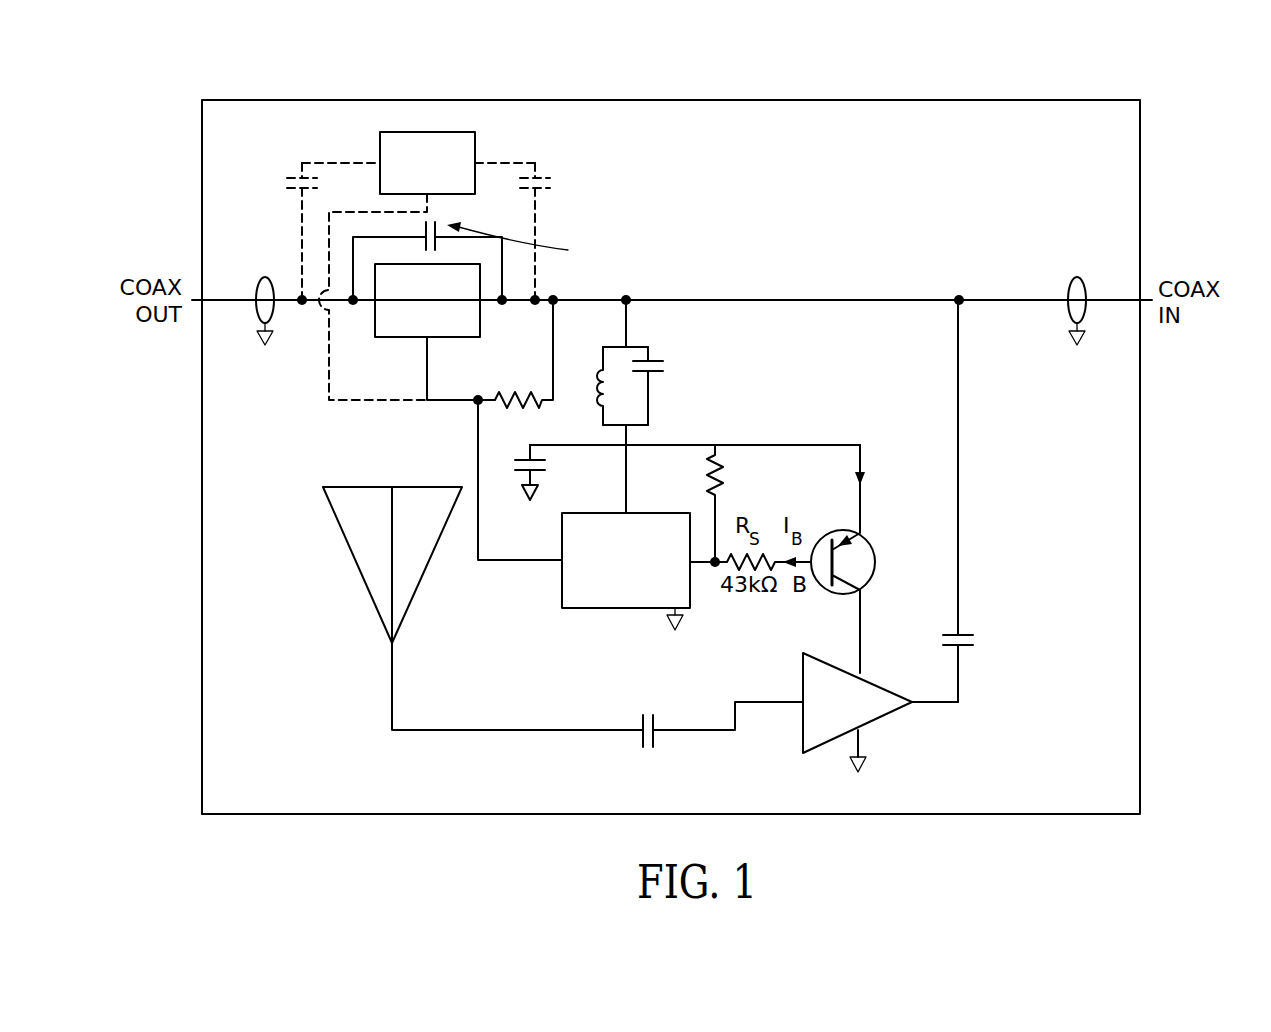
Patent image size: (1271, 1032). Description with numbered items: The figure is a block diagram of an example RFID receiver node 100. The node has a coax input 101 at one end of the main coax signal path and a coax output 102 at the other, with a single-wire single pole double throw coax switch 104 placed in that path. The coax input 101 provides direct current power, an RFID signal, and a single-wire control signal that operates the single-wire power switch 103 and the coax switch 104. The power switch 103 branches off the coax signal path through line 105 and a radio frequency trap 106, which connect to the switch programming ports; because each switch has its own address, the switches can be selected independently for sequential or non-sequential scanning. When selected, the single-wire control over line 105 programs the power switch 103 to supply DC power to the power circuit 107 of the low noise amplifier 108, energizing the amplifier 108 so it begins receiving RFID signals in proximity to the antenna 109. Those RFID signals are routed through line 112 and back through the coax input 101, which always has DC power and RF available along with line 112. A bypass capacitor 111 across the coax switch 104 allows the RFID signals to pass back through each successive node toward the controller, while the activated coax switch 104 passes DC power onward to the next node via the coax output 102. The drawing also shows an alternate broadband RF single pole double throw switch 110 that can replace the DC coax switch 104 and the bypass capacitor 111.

The RFID receiver node 100 is at (1172, 100).
The coax input 101 is at (1051, 293).
The coax output 102 is at (235, 293).
The 1-wire power switch 103 is at (626, 609).
The 1-wire single pole double throw coax switch 104 is at (385, 338).
The line (1-wire control) 105 is at (468, 441).
The radio frequency (RF) trap 106 is at (650, 386).
The power circuit (LNA power control circuit) 107 is at (832, 535).
The low noise amplifier (LNA) 108 is at (880, 718).
The antenna 109 is at (355, 568).
The RF single pole double throw (SPDT) switch 110 is at (427, 132).
The bypass capacitor 111 is at (650, 212).
The line 112 is at (968, 500).